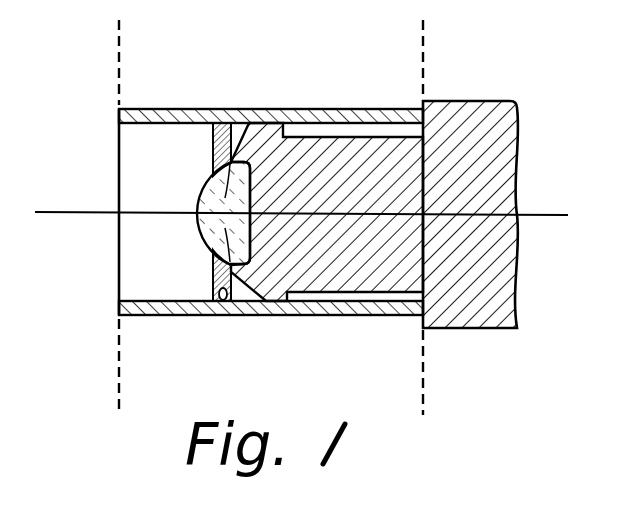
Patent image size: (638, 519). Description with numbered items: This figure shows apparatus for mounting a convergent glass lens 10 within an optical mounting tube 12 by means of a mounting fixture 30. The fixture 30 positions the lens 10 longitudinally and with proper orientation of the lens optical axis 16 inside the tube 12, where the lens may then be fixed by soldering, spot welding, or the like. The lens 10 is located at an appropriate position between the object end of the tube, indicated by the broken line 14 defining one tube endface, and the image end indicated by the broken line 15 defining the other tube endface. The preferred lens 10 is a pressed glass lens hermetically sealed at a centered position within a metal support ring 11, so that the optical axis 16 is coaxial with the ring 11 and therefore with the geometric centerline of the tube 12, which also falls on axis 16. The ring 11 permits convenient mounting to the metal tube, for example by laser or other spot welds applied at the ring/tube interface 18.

The convergent glass lens 10 is at (204, 227).
The metal support ring 11 is at (212, 273).
The optical mounting tube 12 is at (277, 313).
The broken line defining object end tube endface 14 is at (120, 233).
The broken line defining image end tube endface 15 is at (426, 235).
The lens optical axis 16 is at (60, 210).
The ring/tube interface 18 is at (219, 315).
The mounting fixture 30 is at (477, 315).